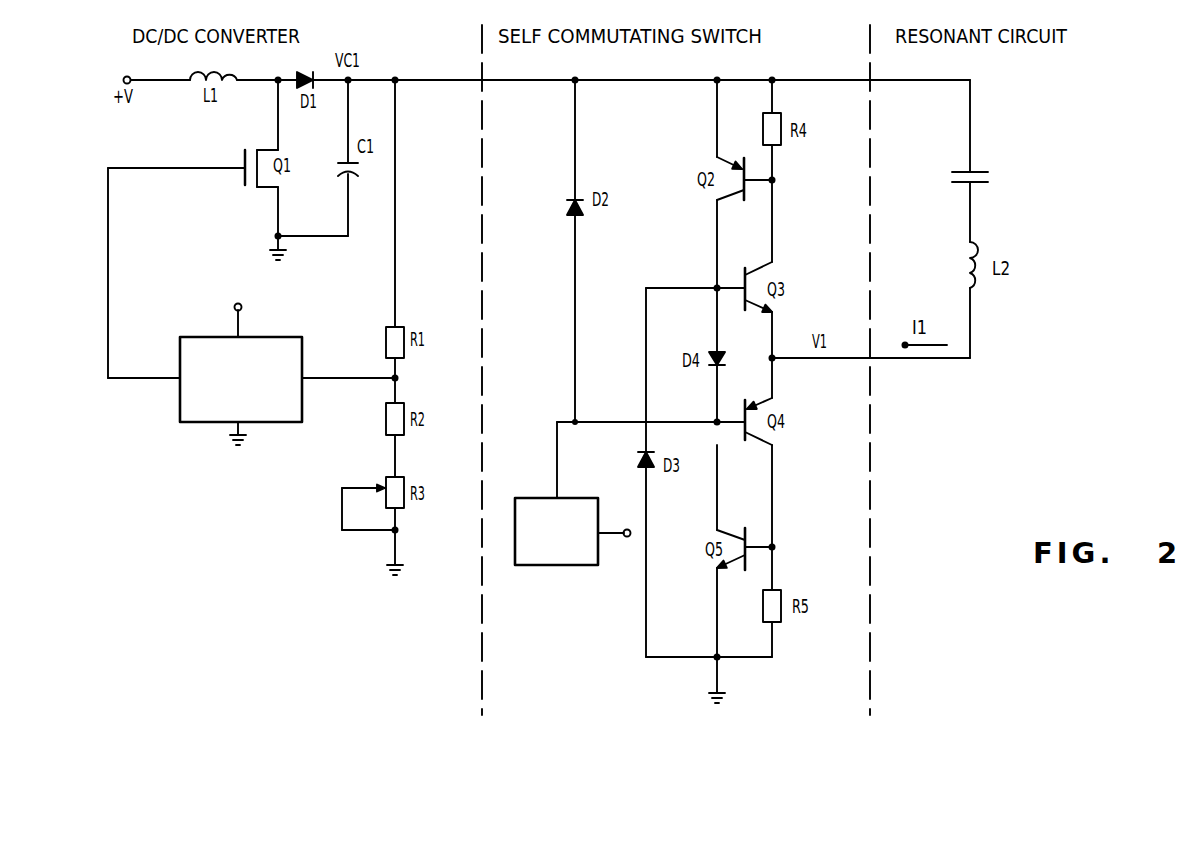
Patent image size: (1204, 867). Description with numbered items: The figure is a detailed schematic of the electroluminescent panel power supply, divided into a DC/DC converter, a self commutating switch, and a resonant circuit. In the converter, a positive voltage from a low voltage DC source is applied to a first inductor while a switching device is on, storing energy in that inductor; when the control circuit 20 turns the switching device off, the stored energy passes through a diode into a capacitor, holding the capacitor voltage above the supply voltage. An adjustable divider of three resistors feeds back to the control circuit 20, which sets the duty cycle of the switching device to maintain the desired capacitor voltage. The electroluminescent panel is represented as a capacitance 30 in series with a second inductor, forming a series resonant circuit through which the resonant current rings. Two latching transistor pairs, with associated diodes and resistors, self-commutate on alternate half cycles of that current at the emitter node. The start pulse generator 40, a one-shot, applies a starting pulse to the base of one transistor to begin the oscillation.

The control circuit 20 is at (197, 337).
The capacitance 30 is at (950, 177).
The start pulse generator 40 is at (546, 565).